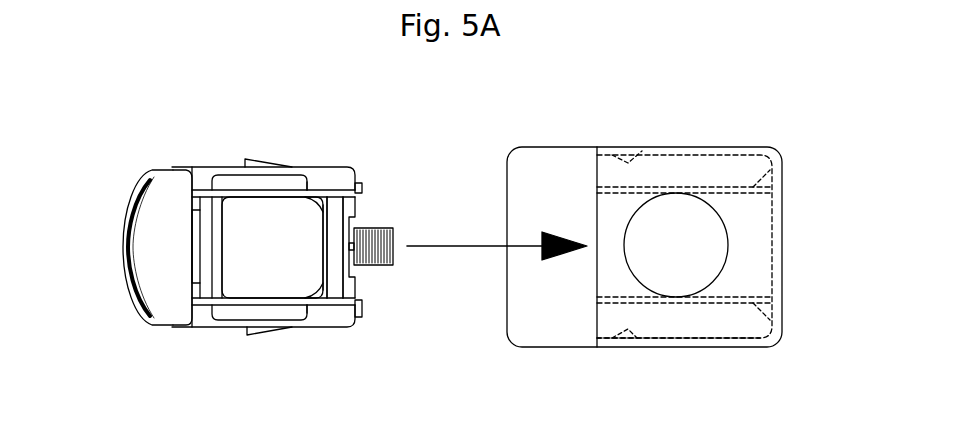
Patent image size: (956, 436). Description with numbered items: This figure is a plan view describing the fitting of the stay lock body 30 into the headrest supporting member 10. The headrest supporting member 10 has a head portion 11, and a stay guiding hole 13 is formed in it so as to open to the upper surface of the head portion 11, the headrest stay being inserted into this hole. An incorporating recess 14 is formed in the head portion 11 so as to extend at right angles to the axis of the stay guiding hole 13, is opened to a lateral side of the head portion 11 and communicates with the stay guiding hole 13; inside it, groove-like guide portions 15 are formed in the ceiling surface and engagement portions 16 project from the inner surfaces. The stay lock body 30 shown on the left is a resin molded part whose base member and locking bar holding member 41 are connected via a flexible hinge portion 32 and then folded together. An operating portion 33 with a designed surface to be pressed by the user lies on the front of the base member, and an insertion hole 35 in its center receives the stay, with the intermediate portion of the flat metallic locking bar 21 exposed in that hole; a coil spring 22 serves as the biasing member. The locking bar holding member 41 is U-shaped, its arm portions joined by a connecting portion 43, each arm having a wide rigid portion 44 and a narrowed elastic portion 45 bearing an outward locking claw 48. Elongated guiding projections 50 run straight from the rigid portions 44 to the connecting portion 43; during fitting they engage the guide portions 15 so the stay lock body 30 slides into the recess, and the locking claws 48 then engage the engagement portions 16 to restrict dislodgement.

The headrest supporting member 10 is at (781, 232).
The head portion 11 is at (706, 348).
The stay guiding hole 13 is at (718, 208).
The incorporating recess 14 is at (598, 158).
The guide portions 15 is at (783, 160).
The engagement portions 16 is at (644, 150).
The locking bar 21 is at (330, 258).
The coil spring 22 is at (383, 264).
The stay lock body 30 is at (100, 316).
The hinge portion 32 is at (358, 320).
The operating portion 33 is at (131, 191).
The insertion hole 35 is at (248, 210).
The locking bar holding member 41 is at (335, 167).
The connecting portion 43 is at (200, 293).
The rigid portion 44 is at (333, 313).
The elastic portion 45 is at (237, 167).
The locking claw 48 is at (248, 160).
The elongated guiding projections 50 is at (297, 187).